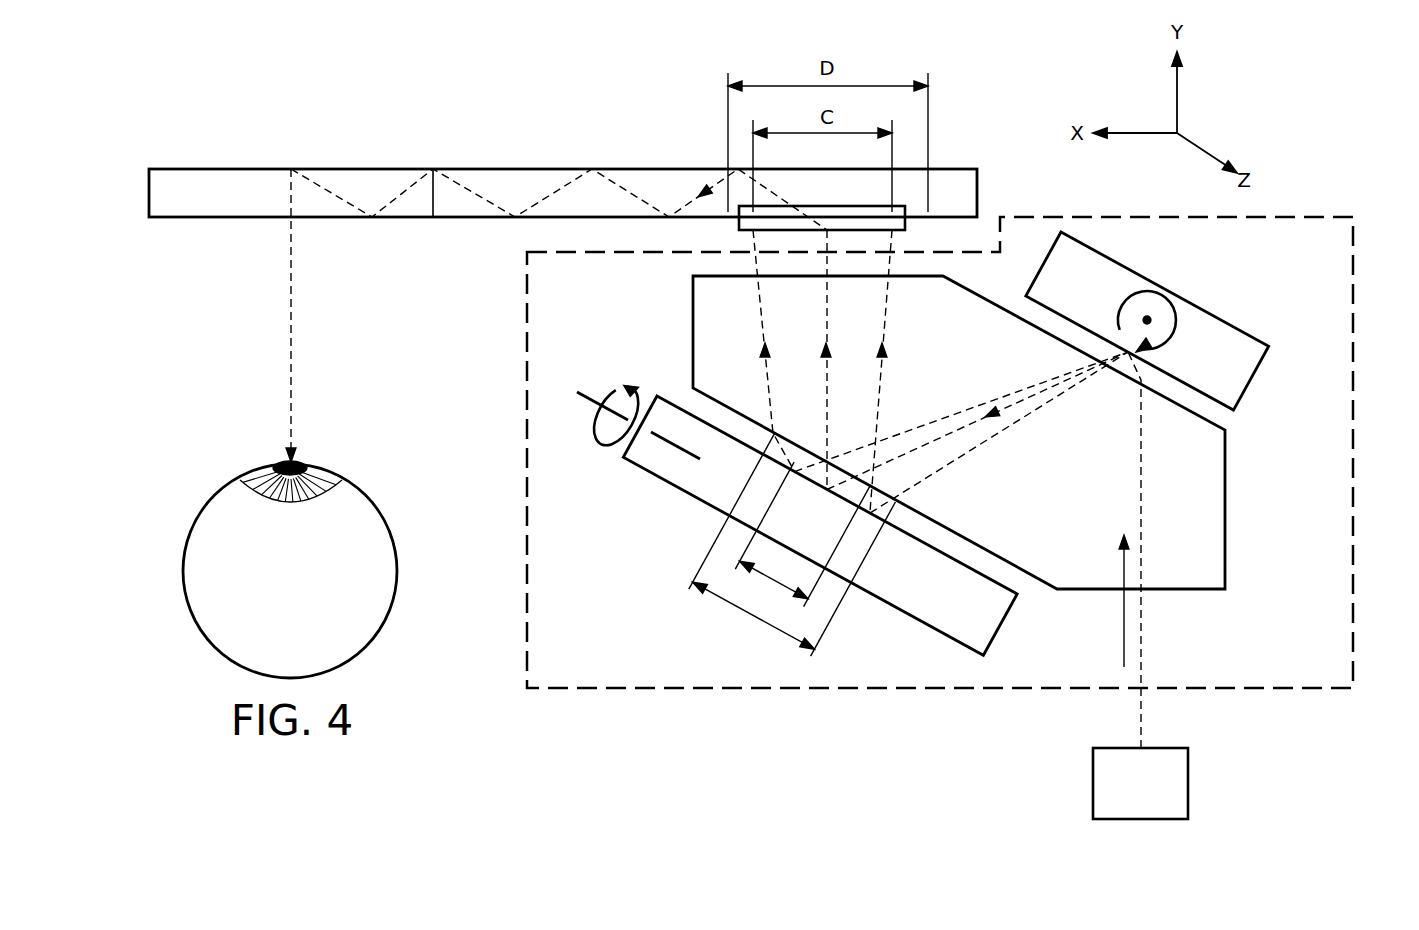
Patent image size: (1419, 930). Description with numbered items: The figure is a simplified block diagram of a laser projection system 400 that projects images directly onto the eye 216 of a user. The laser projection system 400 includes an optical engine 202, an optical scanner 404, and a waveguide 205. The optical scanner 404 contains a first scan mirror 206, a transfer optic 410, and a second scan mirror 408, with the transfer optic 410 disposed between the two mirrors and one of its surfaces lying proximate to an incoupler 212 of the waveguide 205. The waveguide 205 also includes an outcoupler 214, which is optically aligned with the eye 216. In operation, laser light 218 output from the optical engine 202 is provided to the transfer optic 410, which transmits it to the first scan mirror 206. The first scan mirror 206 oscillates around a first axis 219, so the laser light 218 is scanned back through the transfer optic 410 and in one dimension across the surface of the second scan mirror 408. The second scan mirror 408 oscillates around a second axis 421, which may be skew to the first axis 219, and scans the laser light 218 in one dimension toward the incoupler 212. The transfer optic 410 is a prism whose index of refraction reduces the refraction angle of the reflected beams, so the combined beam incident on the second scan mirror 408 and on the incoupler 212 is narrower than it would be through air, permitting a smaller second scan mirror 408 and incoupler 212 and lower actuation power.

The laser projection system 400 is at (322, 97).
The outcoupler 214 is at (219, 178).
The waveguide 205 is at (513, 178).
The incoupler 212 is at (899, 204).
The first axis 219 is at (1150, 318).
The first scan mirror 206 is at (1232, 322).
The transfer optic 410 is at (1226, 508).
The second scan mirror 408 is at (670, 483).
The second axis 421 is at (668, 435).
The optical scanner 404 is at (872, 698).
The eye 216 is at (199, 628).
The laser light 218 is at (1141, 712).
The optical engine 202 is at (1140, 783).